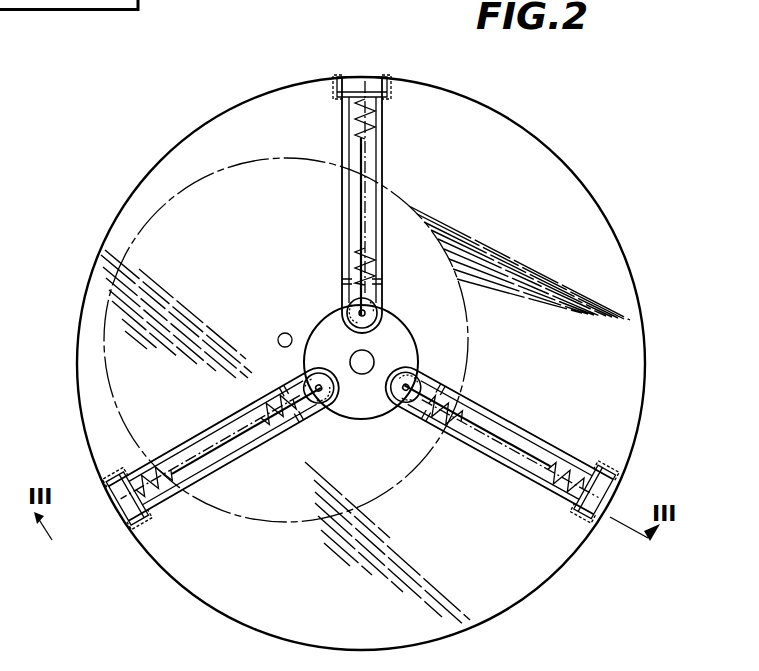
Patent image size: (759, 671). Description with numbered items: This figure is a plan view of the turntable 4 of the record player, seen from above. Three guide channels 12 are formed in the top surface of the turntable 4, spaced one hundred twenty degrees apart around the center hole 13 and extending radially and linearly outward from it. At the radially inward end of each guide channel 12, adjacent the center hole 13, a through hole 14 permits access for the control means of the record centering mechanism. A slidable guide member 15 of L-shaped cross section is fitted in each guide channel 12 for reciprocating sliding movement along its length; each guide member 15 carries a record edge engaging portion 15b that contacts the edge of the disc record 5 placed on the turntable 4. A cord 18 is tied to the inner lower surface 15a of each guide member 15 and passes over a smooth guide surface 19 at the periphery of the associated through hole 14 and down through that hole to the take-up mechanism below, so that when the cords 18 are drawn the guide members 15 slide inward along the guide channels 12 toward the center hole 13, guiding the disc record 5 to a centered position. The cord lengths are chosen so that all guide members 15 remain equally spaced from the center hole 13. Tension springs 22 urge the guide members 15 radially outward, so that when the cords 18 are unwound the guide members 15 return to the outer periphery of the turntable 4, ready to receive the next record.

The turntable 4 is at (538, 142).
The disc record 5 is at (458, 273).
The guide channel 12 is at (380, 158).
The center hole 13 is at (368, 352).
The through hole 14 is at (350, 318).
The guide member 15 is at (362, 82).
The inner lower surface 15a is at (338, 97).
The record edge engaging portion 15b is at (378, 78).
The cord 18 is at (360, 150).
The smooth guide surface 19 is at (352, 298).
The tension spring 22 is at (378, 256).